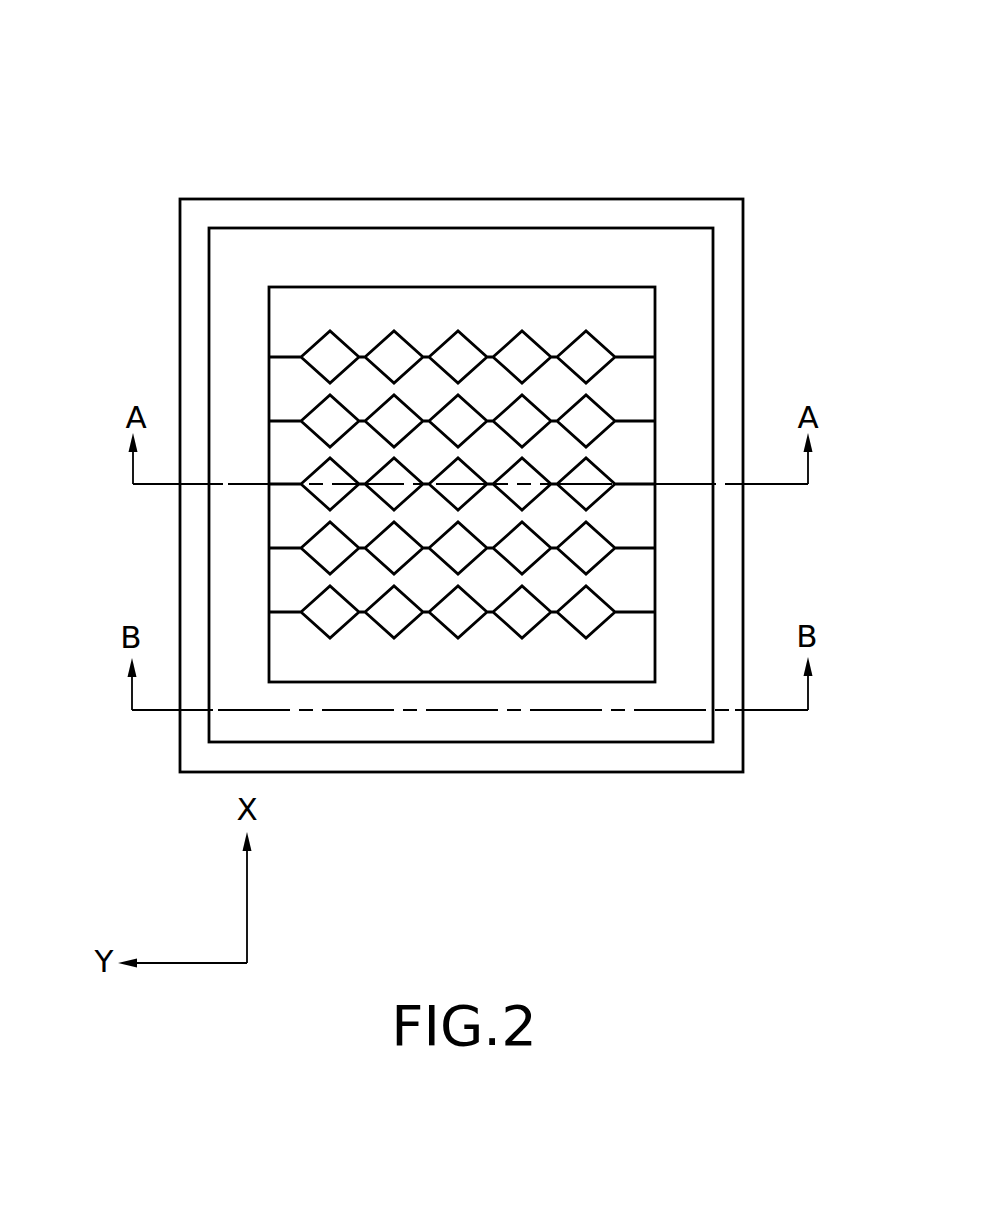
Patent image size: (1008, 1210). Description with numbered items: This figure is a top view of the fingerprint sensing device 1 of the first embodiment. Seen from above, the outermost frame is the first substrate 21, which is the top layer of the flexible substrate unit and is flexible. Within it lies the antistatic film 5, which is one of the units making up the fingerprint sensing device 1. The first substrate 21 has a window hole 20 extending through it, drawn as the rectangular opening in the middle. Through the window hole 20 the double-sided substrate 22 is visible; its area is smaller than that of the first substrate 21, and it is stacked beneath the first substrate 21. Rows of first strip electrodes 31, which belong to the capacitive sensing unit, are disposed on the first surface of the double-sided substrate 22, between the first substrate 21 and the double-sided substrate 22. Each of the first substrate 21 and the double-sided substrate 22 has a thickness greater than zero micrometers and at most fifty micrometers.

The fingerprint sensing device 1 is at (146, 120).
The antistatic film 5 is at (627, 252).
The window hole 20 is at (517, 272).
The first substrate 21 is at (717, 217).
The double-sided substrate 22 is at (622, 665).
The first strip electrodes 31 is at (671, 414).